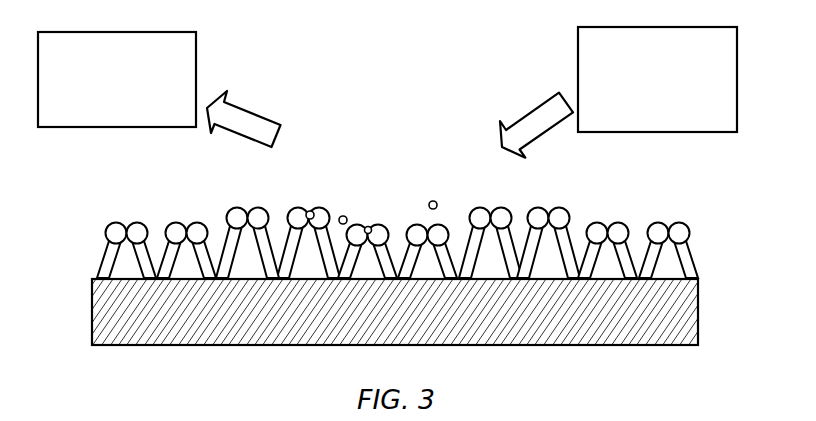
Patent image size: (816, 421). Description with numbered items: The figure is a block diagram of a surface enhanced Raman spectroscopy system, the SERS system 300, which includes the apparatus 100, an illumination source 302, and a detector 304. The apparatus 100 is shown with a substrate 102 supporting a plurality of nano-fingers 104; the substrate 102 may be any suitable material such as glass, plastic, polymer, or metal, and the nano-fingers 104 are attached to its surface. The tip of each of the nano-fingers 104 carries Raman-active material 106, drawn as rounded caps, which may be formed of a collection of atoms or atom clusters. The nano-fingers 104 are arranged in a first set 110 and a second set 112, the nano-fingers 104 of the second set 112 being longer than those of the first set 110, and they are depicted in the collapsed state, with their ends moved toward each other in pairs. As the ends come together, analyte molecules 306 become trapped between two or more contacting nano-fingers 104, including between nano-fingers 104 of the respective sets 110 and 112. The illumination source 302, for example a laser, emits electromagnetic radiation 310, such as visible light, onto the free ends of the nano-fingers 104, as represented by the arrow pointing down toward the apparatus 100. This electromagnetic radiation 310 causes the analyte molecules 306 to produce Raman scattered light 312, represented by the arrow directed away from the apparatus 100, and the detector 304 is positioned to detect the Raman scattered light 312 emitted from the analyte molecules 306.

The SERS system 300 is at (363, 36).
The detector 304 is at (100, 103).
The illumination source 302 is at (640, 113).
The Raman scattered light 312 is at (250, 106).
The electromagnetic radiation 310 is at (513, 118).
The apparatus 100 is at (122, 169).
The substrate 102 is at (92, 312).
The nano-fingers 104 is at (630, 243).
The Raman-active material 106 is at (556, 209).
The second set of nano-fingers 112 is at (277, 194).
The analyte molecules 306 is at (313, 212).
The first set of nano-fingers 110 is at (452, 209).